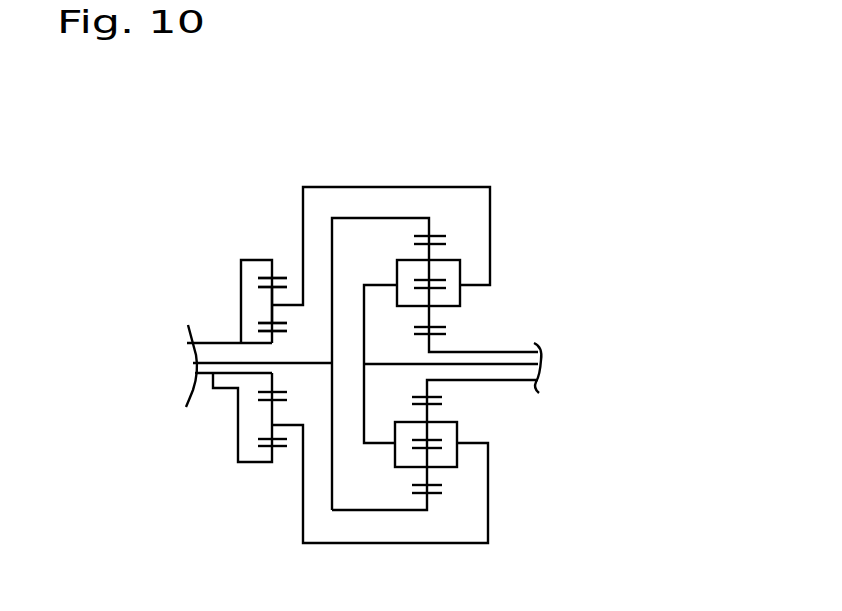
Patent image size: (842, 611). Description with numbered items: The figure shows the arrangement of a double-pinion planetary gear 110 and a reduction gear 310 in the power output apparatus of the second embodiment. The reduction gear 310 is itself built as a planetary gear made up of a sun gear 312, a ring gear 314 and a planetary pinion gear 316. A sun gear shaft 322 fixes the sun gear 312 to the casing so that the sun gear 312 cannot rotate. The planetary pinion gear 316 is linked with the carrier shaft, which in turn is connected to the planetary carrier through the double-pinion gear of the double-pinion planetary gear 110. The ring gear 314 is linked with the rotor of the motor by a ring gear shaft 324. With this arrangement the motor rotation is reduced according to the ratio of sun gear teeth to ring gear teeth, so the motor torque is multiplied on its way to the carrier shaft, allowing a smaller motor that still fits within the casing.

The double-pinion planetary gear 110 is at (464, 157).
The reduction gear 310 is at (238, 203).
The sun gear 312 is at (270, 338).
The ring gear 314 is at (273, 268).
The planetary pinion gear 316 is at (270, 292).
The sun gear shaft 322 is at (248, 338).
The ring gear shaft 324 is at (213, 390).